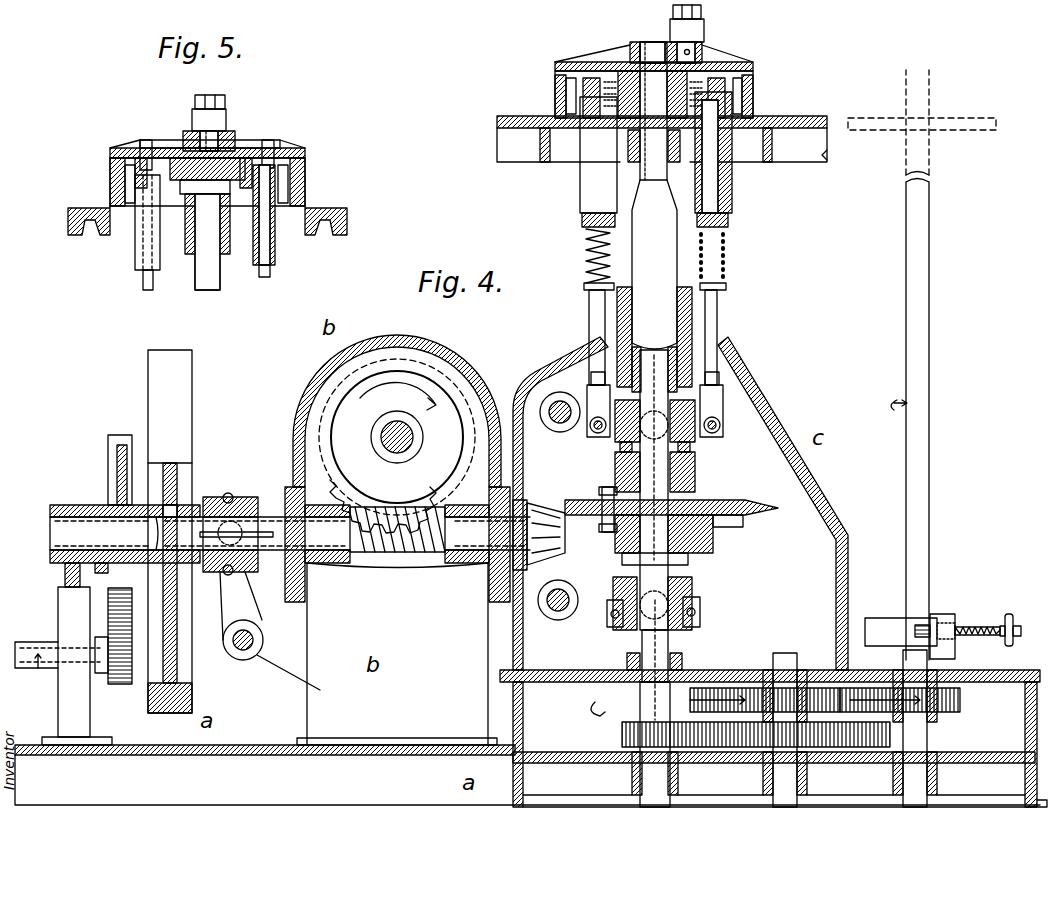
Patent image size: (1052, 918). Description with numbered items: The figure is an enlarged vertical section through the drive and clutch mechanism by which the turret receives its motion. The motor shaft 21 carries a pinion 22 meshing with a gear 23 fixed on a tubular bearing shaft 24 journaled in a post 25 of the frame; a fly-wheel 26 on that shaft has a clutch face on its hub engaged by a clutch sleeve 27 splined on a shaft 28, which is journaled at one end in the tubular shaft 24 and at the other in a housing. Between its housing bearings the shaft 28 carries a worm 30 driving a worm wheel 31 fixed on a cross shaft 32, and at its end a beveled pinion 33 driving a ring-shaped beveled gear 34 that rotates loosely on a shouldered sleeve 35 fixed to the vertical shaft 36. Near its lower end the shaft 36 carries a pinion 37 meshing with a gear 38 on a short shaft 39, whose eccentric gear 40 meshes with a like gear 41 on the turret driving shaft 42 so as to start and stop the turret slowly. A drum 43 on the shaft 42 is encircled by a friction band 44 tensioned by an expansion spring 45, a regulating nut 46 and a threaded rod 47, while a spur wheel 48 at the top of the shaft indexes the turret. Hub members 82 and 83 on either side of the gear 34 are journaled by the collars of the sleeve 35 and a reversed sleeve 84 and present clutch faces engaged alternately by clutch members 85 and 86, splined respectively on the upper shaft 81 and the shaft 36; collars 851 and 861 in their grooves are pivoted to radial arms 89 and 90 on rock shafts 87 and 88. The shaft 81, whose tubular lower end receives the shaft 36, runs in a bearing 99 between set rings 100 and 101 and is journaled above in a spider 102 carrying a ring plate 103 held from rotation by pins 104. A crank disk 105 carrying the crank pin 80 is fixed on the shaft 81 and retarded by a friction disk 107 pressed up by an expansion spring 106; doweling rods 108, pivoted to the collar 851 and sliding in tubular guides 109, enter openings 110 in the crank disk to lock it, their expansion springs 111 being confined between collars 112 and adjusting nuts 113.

In FIG. 4, the motor shaft 21 is at (35, 642).
In FIG. 4, the pinion 22 is at (116, 684).
In FIG. 4, the gear 23 is at (118, 433).
In FIG. 4, the tubular bearing shaft 24 is at (55, 530).
In FIG. 4, the post 25 is at (74, 504).
In FIG. 4, the fly-wheel 26 is at (188, 400).
In FIG. 4, the clutch sleeve 27 is at (240, 494).
In FIG. 4, the shaft 28 is at (270, 550).
In FIG. 4, the worm 30 is at (398, 552).
In FIG. 4, the worm wheel 31 is at (397, 505).
In FIG. 4, the cross shaft 32 is at (410, 435).
In FIG. 4, the beveled pinion 33 is at (565, 535).
In FIG. 4, the beveled gear 34 is at (760, 500).
In FIG. 4, the shouldered sleeve 35 is at (680, 565).
In FIG. 5, the vertical shaft 36 is at (212, 280).
In FIG. 4, the vertical shaft 36 is at (670, 644).
In FIG. 4, the pinion 37 is at (625, 740).
In FIG. 4, the gear 38 is at (740, 745).
In FIG. 4, the short shaft 39 is at (790, 660).
In FIG. 4, the eccentric gear 40 is at (690, 698).
In FIG. 4, the eccentric gear 41 is at (948, 712).
In FIG. 4, the turret driving shaft 42 is at (930, 252).
In FIG. 4, the drum 43 is at (932, 612).
In FIG. 4, the friction band 44 is at (875, 622).
In FIG. 4, the expansion spring 45 is at (965, 622).
In FIG. 4, the regulating nut 46 is at (1012, 615).
In FIG. 4, the threaded rod 47 is at (1018, 640).
In FIG. 4, the spur wheel 48 is at (880, 120).
In FIG. 4, the crank pin 80 is at (673, 12).
In FIG. 4, the shaft 81 is at (654, 195).
In FIG. 4, the hub member 82 is at (615, 466).
In FIG. 4, the hub member 83 is at (700, 552).
In FIG. 4, the sleeve 84 is at (618, 458).
In FIG. 4, the clutch member 85 is at (618, 440).
In FIG. 4, the non-rotating collar 851 is at (712, 432).
In FIG. 4, the clutch member 86 is at (694, 628).
In FIG. 4, the non-rotating collar 861 is at (700, 612).
In FIG. 4, the rock shaft 87 is at (556, 424).
In FIG. 4, the rock shaft 88 is at (554, 612).
In FIG. 4, the radial arm 89 is at (598, 398).
In FIG. 4, the radial arm 90 is at (608, 600).
In FIG. 4, the bearing 99 is at (617, 315).
In FIG. 4, the set ring 100 is at (710, 295).
In FIG. 4, the set ring 101 is at (693, 375).
In FIG. 5, the spider 102 is at (320, 208).
In FIG. 4, the spider 102 is at (780, 122).
In FIG. 5, the ring plate 103 is at (110, 175).
In FIG. 4, the ring plate 103 is at (760, 92).
In FIG. 5, the pins 104 is at (300, 180).
In FIG. 4, the pins 104 is at (745, 114).
In FIG. 5, the crank disk 105 is at (300, 150).
In FIG. 4, the crank disk 105 is at (740, 66).
In FIG. 4, the expansion spring 106 is at (630, 105).
In FIG. 5, the friction disk 107 is at (228, 145).
In FIG. 4, the friction disk 107 is at (620, 65).
In FIG. 5, the doweling rods 108 is at (143, 285).
In FIG. 4, the doweling rods 108 is at (590, 310).
In FIG. 5, the tubular guides 109 is at (137, 255).
In FIG. 4, the tubular guides 109 is at (583, 188).
In FIG. 5, the openings 110 is at (146, 142).
In FIG. 4, the expansion springs 111 is at (586, 255).
In FIG. 4, the collars 112 is at (586, 287).
In FIG. 4, the adjusting nuts 113 is at (583, 222).